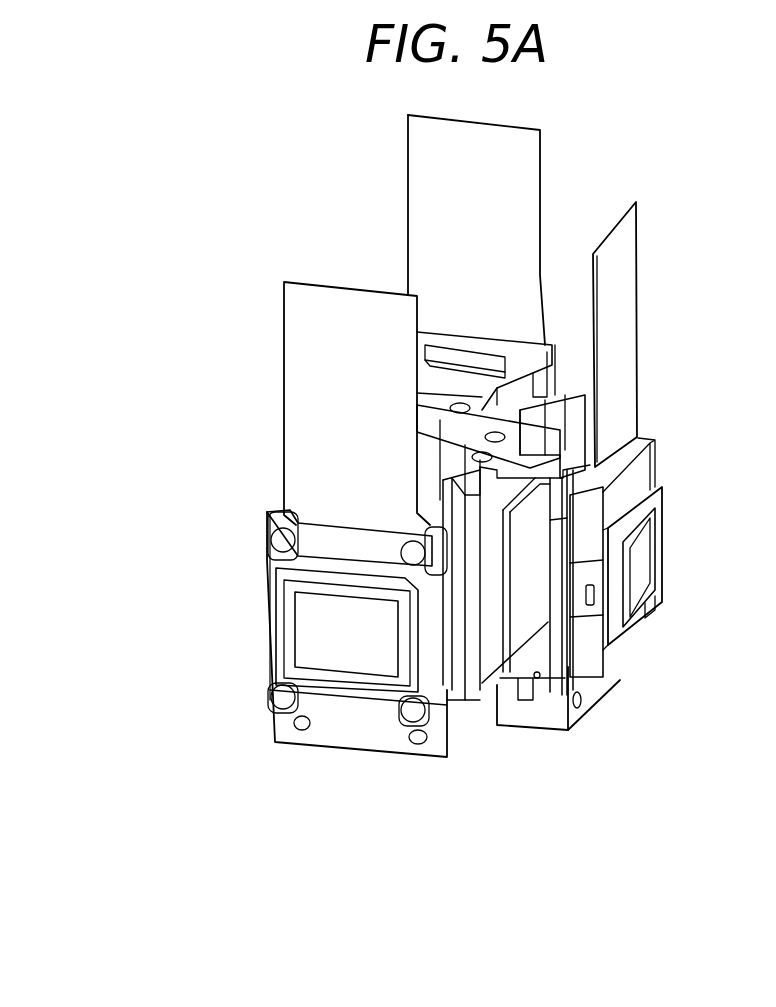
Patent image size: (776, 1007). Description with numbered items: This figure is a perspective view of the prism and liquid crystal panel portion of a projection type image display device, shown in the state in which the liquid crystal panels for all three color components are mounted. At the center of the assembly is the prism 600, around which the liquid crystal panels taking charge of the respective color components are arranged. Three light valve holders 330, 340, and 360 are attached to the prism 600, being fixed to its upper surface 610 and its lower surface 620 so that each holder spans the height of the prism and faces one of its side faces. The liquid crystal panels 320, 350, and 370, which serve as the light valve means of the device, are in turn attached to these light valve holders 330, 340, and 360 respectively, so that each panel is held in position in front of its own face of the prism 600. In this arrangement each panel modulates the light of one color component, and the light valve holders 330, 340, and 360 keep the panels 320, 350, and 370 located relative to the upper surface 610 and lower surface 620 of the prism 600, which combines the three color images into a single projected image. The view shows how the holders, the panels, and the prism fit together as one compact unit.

The liquid crystal panel 320 is at (638, 557).
The light valve holder 330 is at (547, 710).
The light valve holder 340 is at (325, 730).
The liquid crystal panel 350 is at (315, 608).
The light valve holder 360 is at (493, 352).
The liquid crystal panel 370 is at (507, 207).
The prism 600 is at (488, 627).
The upper surface 610 is at (443, 433).
The lower surface 620 is at (478, 700).